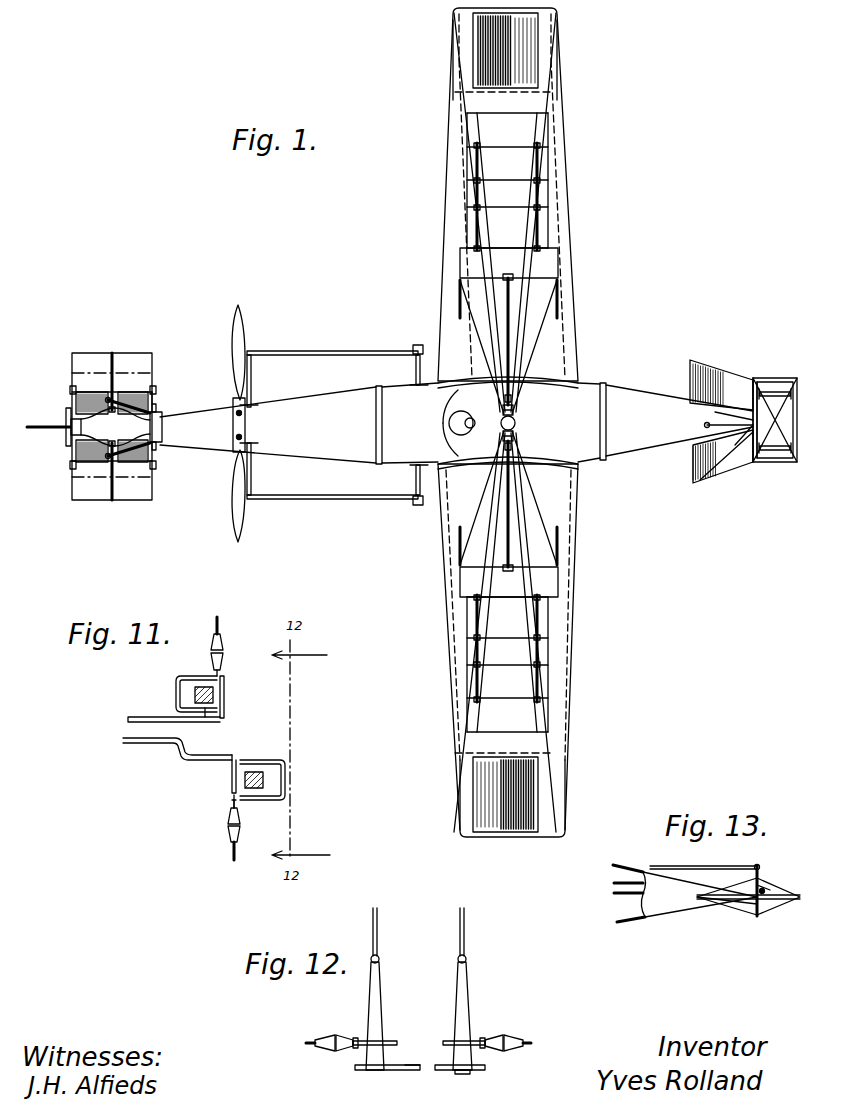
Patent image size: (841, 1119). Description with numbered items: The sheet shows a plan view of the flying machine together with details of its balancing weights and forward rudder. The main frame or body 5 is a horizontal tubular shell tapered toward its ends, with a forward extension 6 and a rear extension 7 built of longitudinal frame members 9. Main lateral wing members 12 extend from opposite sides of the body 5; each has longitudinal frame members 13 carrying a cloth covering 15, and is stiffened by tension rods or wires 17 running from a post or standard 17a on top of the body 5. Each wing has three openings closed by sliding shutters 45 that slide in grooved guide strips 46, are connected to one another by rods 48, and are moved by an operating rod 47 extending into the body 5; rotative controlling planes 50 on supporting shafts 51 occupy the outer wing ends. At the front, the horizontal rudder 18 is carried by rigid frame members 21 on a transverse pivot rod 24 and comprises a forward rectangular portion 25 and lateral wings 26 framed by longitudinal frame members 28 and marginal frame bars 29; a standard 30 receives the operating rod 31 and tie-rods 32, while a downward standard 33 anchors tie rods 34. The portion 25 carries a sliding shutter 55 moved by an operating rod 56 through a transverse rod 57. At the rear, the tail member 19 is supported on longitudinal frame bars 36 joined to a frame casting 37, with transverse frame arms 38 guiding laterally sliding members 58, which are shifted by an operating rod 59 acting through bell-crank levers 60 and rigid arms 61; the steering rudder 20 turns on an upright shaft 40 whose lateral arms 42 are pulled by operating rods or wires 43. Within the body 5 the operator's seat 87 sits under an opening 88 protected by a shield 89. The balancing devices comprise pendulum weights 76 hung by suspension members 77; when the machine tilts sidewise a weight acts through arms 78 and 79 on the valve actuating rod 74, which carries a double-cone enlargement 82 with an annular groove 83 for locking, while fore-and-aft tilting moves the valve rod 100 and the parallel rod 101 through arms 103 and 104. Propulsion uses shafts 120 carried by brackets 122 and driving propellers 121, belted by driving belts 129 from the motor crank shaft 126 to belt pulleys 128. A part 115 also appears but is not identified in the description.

In FIG. 1, the main frame or body 5 is at (596, 379).
In FIG. 1, the forward extension 6 is at (632, 390).
In FIG. 13, the forward extension 6 is at (652, 922).
In FIG. 1, the rear extension 7 is at (318, 398).
In FIG. 1, the longitudinal frame members 9 is at (158, 415).
In FIG. 13, the longitudinal frame members 9 is at (613, 865).
In FIG. 1, the wing members 12 is at (575, 200).
In FIG. 1, the longitudinal frame members 13 is at (455, 103).
In FIG. 1, the covering 15 is at (452, 205).
In FIG. 1, the tension rods or wires 17 is at (492, 337).
In FIG. 1, the post or standard 17a is at (516, 423).
In FIG. 1, the horizontal rudder 18 is at (749, 369).
In FIG. 13, the horizontal rudder 18 is at (700, 900).
In FIG. 1, the tail member 19 is at (166, 394).
In FIG. 1, the steering rudder 20 is at (44, 438).
In FIG. 1, the rigid frame members 21 is at (715, 412).
In FIG. 13, the pivot rod 24 is at (750, 898).
In FIG. 1, the forward rectangular portion 25 is at (775, 390).
In FIG. 1, the lateral wings 26 is at (712, 367).
In FIG. 1, the longitudinal frame members 28 is at (767, 378).
In FIG. 1, the frame bars 29 is at (700, 363).
In FIG. 13, the standard 30 is at (758, 866).
In FIG. 1, the operating rod 31 is at (704, 426).
In FIG. 13, the operating rod 31 is at (668, 866).
In FIG. 1, the tie-rods or wires 32 is at (692, 367).
In FIG. 13, the tie-rods or wires 32 is at (733, 884).
In FIG. 13, the standard 33 is at (752, 903).
In FIG. 13, the tie rods or wires 34 is at (745, 905).
In FIG. 1, the longitudinal frame bars 36 is at (108, 432).
In FIG. 1, the frame casting 37 is at (66, 416).
In FIG. 1, the frame arms 38 is at (72, 383).
In FIG. 1, the upright shaft 40 is at (71, 430).
In FIG. 1, the lateral arms 42 is at (72, 400).
In FIG. 1, the operating rods or wires 43 is at (242, 414).
In FIG. 1, the sliding shutters 45 is at (509, 422).
In FIG. 1, the grooved guide strips 46 is at (467, 158).
In FIG. 1, the operating rod 47 is at (510, 322).
In FIG. 1, the rods 48 is at (537, 160).
In FIG. 1, the controlling planes 50 is at (538, 52).
In FIG. 1, the supporting shafts 51 is at (503, 90).
In FIG. 1, the sliding shutter 55 is at (776, 460).
In FIG. 13, the operating rod 56 is at (614, 883).
In FIG. 1, the transverse rod 57 is at (757, 458).
In FIG. 1, the sliding members 58 is at (95, 353).
In FIG. 1, the operating rod 59 is at (162, 427).
In FIG. 1, the bell-crank levers 60 is at (160, 410).
In FIG. 1, the rigid arms 61 is at (113, 353).
In FIG. 11, the valve actuating rod 74 is at (218, 617).
In FIG. 12, the valve actuating rod 74 is at (306, 1043).
In FIG. 11, the shifting weight 76 is at (213, 692).
In FIG. 12, the shifting weight 76 is at (378, 978).
In FIG. 12, the suspension member 77 is at (386, 914).
In FIG. 11, the transverse arm 78 is at (190, 676).
In FIG. 12, the transverse arm 78 is at (353, 1047).
In FIG. 11, the transverse arm 79 is at (205, 712).
In FIG. 12, the transverse arm 79 is at (393, 1041).
In FIG. 11, the enlargement 82 is at (224, 642).
In FIG. 12, the enlargement 82 is at (325, 1048).
In FIG. 11, the annular groove 83 is at (223, 656).
In FIG. 12, the annular groove 83 is at (332, 1037).
In FIG. 1, the seat 87 is at (472, 428).
In FIG. 1, the opening 88 is at (455, 400).
In FIG. 1, the shield 89 is at (450, 448).
In FIG. 11, the valve rod 100 is at (145, 740).
In FIG. 12, the valve rod 100 is at (415, 1070).
In FIG. 11, the operating rod 101 is at (140, 717).
In FIG. 12, the operating rod 101 is at (442, 1070).
In FIG. 11, the arm 103 is at (232, 778).
In FIG. 12, the arm 103 is at (362, 1070).
In FIG. 11, the arm 104 is at (224, 705).
In FIG. 12, the arm 104 is at (462, 1074).
In FIG. 1, the bearing 115 is at (468, 413).
In FIG. 1, the propeller shafts 120 is at (335, 351).
In FIG. 1, the propellers 121 is at (245, 318).
In FIG. 1, the brackets 122 is at (252, 368).
In FIG. 1, the crank shaft 126 is at (335, 499).
In FIG. 1, the belt pulleys 128 is at (416, 345).
In FIG. 1, the driving belts 129 is at (392, 410).